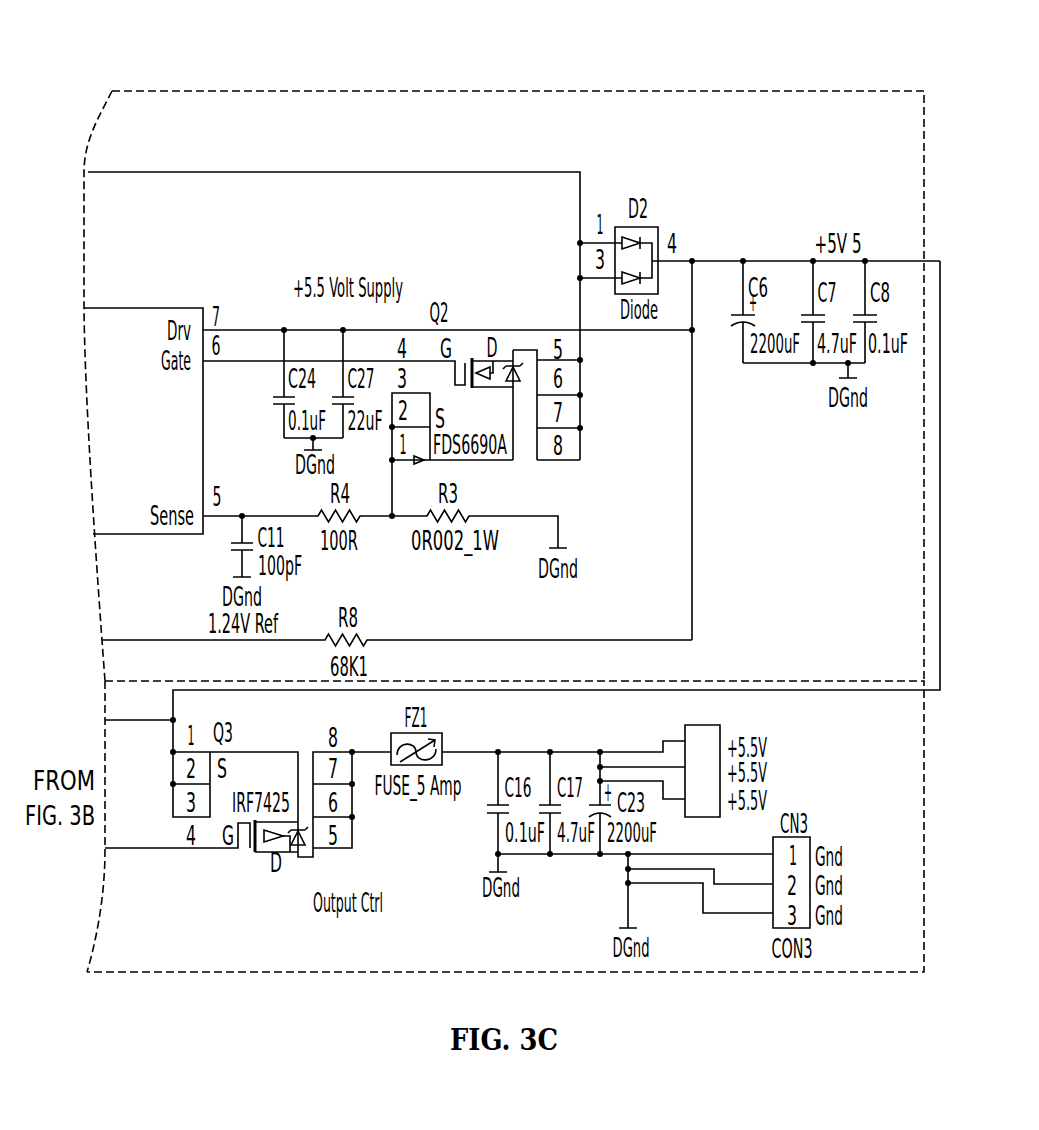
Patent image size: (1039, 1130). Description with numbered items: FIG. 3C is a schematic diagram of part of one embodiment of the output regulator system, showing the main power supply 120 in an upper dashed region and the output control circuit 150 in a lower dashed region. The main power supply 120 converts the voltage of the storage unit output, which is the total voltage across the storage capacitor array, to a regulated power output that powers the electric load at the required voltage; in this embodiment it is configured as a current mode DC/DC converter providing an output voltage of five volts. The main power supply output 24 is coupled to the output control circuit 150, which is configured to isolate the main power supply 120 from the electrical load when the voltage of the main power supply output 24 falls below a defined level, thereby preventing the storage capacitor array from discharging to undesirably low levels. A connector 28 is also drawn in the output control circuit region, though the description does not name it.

The main power supply 120 is at (514, 90).
The output control circuit 150 is at (835, 972).
The output connector 28 is at (688, 728).
The main power supply output 24 is at (817, 690).